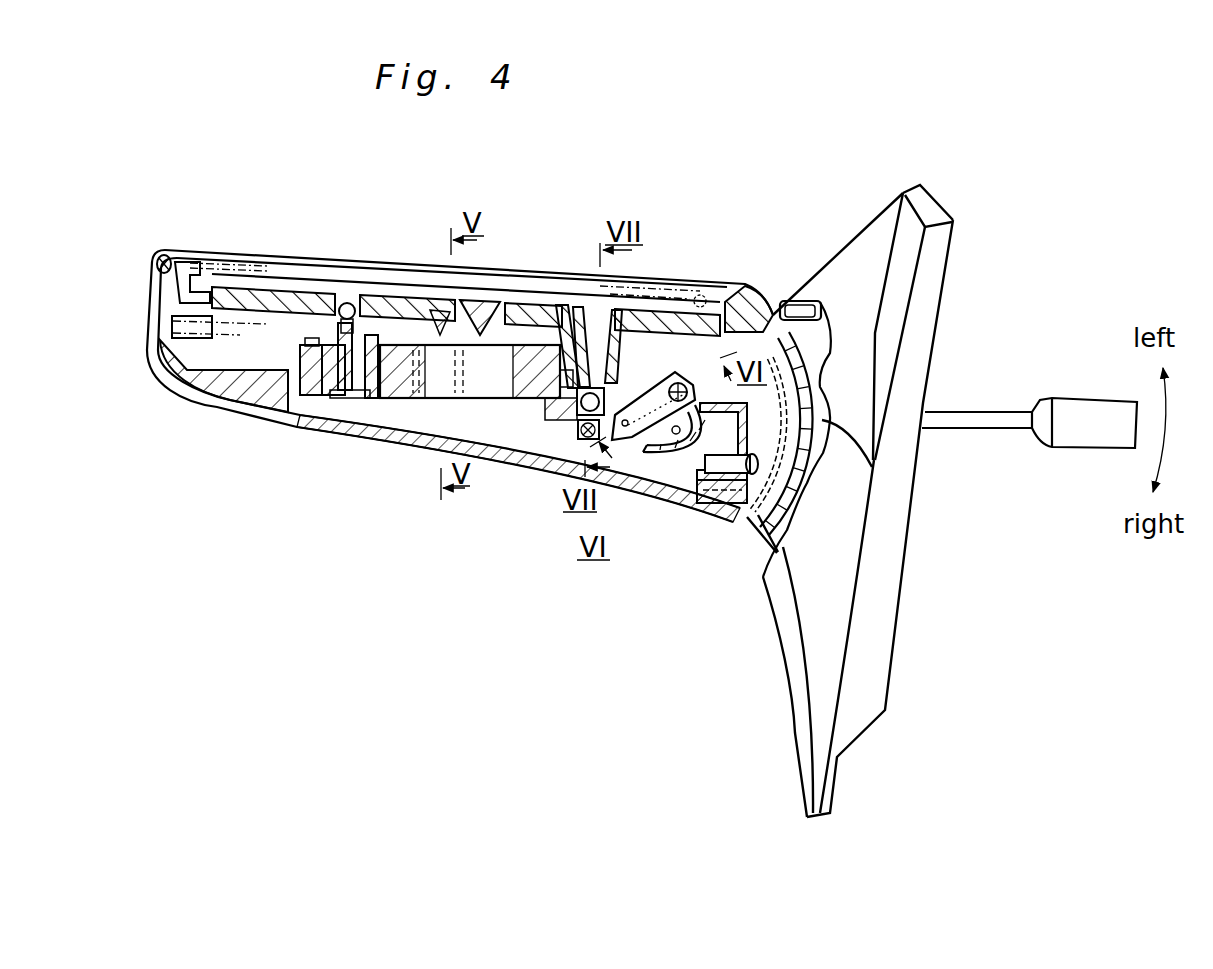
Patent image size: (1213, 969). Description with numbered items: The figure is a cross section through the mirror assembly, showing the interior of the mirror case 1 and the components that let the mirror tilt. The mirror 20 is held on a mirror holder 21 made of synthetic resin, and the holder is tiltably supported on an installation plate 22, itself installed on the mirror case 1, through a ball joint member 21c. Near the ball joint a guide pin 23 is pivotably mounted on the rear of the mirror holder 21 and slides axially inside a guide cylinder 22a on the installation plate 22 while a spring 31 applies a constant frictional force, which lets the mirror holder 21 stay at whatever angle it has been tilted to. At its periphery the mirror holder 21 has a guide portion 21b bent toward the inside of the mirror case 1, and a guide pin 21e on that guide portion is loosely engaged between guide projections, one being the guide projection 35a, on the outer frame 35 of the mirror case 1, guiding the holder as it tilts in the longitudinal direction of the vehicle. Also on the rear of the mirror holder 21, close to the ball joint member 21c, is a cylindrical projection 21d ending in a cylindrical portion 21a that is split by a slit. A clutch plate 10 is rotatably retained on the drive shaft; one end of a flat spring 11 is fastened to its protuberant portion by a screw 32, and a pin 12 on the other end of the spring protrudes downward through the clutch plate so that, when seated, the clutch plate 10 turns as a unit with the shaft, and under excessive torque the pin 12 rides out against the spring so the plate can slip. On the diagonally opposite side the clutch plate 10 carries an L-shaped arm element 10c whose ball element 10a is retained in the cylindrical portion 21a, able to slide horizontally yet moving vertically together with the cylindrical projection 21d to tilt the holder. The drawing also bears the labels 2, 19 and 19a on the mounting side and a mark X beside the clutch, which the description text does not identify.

The mirror case 1 is at (187, 387).
The mirror base 2 is at (953, 265).
The clutch plate 10 is at (645, 380).
The ball element 10a is at (582, 440).
The arm element 10c is at (600, 388).
The flat spring 11 is at (660, 433).
The pin 12 is at (631, 445).
The control knob 19 is at (1105, 393).
The knob body 19a is at (1072, 437).
The mirror 20 is at (262, 285).
The mirror holder 21 is at (268, 313).
The cylindrical portion 21a is at (565, 415).
The guide portion 21b is at (170, 293).
The ball joint member 21c is at (440, 305).
The cylindrical projection 21d is at (550, 343).
The guide pin 21e is at (177, 302).
The installation plate 22 is at (320, 362).
The guide cylinder 22a is at (337, 353).
The guide pin 23 is at (370, 295).
The spring 31 is at (363, 380).
The screw 32 is at (705, 475).
The outer frame 35 is at (153, 323).
The guide projection 35a is at (162, 266).
The pivot axis X is at (676, 434).